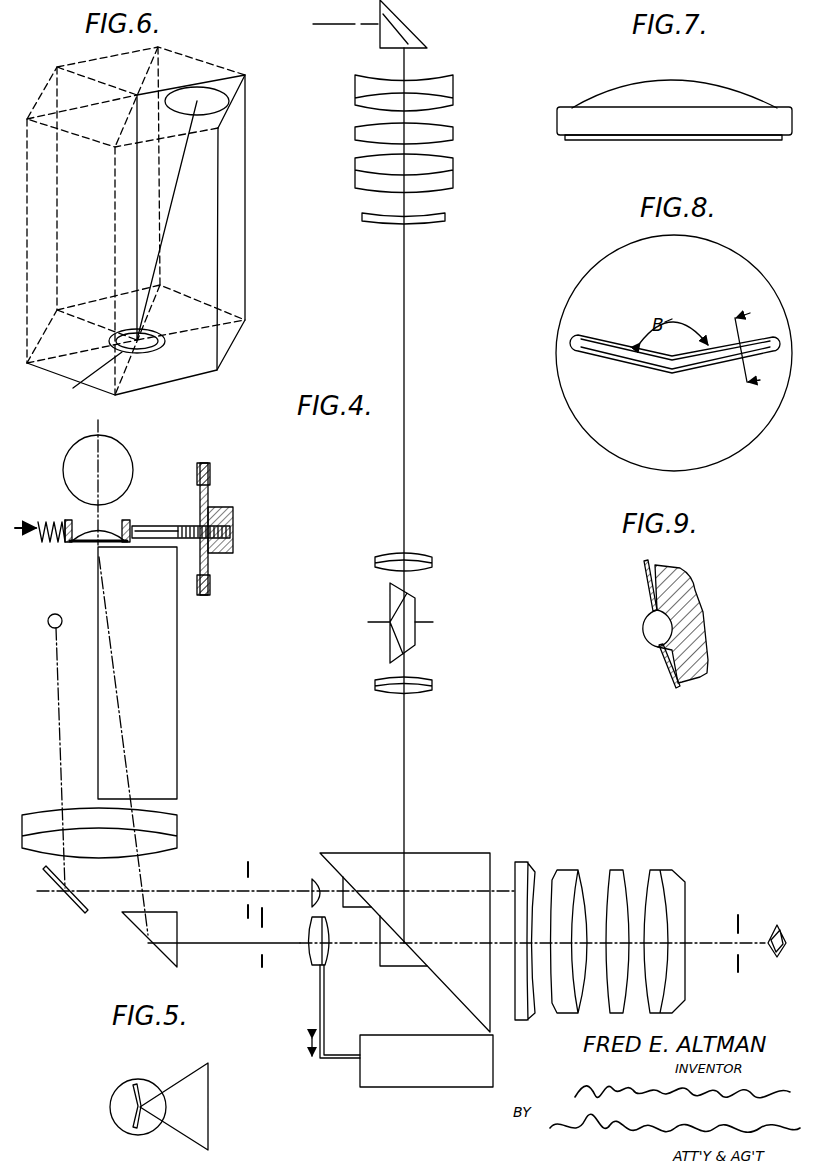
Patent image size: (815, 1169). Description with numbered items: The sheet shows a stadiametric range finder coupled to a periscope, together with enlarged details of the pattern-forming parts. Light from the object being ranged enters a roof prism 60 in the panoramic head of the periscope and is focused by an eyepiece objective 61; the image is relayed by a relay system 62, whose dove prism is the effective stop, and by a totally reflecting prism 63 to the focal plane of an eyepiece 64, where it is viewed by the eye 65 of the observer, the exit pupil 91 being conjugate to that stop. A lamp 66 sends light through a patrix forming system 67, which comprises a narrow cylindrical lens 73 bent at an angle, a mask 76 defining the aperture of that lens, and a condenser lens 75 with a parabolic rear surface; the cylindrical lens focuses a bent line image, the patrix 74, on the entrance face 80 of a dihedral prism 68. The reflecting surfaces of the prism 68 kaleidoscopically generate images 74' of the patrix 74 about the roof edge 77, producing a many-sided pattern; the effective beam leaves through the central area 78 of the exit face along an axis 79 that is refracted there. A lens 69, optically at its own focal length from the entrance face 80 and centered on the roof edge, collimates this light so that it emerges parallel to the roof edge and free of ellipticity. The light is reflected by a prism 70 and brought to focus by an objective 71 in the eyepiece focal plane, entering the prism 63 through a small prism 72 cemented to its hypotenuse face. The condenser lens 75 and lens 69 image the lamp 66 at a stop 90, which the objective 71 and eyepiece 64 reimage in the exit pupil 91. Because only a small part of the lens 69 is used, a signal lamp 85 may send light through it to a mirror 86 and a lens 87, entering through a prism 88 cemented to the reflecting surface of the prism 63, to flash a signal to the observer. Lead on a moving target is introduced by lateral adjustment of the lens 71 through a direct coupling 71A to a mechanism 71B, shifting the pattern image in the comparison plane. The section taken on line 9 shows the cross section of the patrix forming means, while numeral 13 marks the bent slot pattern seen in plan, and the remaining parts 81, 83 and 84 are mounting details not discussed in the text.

In FIG. 8, the section line 9- 9 is at (755, 349).
In FIG. 8, the reticle chevron 13 is at (577, 341).
In FIG. 4, the roof prism 60 is at (410, 40).
In FIG. 4, the eyepiece objective 61 is at (348, 72).
In FIG. 4, the relay system 62 is at (360, 553).
In FIG. 4, the totally reflecting prism 63 is at (456, 858).
In FIG. 4, the eyepiece 64 is at (675, 853).
In FIG. 4, the eye 65 is at (786, 915).
In FIG. 4, the lamp 66 is at (113, 452).
In FIG. 7, the patrix forming system 67 is at (558, 118).
In FIG. 9, the patrix forming system 67 is at (694, 602).
In FIG. 5, the patrix forming system 67 is at (116, 1098).
In FIG. 4, the patrix forming system 67 is at (82, 544).
In FIG. 6, the prism 68 is at (236, 188).
In FIG. 5, the prism 68 is at (200, 1097).
In FIG. 4, the prism 68 is at (177, 710).
In FIG. 4, the lens 69 is at (170, 838).
In FIG. 4, the prism 70 is at (160, 952).
In FIG. 4, the objective 71 is at (316, 962).
In FIG. 4, the direct coupling 71A is at (320, 1012).
In FIG. 4, the mechanism 71B is at (393, 1088).
In FIG. 4, the small prism 72 is at (394, 958).
In FIG. 7, the narrow cylindrical lens 73 is at (580, 139).
In FIG. 9, the narrow cylindrical lens 73 is at (655, 630).
In FIG. 5, the narrow cylindrical lens 73 is at (141, 1085).
In FIG. 6, the patrix 74 is at (154, 365).
In FIG. 6, the images 74' is at (83, 376).
In FIG. 7, the condenser lens 75 is at (703, 92).
In FIG. 4, the condenser lens 75 is at (103, 530).
In FIG. 8, the mask 76 is at (580, 412).
In FIG. 9, the mask 76 is at (645, 568).
In FIG. 6, the roof edge 77 is at (137, 215).
In FIG. 6, the central area 78 is at (222, 92).
In FIG. 6, the axis 79 is at (171, 205).
In FIG. 4, the entrance face 80 is at (160, 550).
In FIG. 4, the spring 81 is at (47, 520).
In FIG. 4, the bracket 83 is at (220, 512).
In FIG. 4, the bracket flange 84 is at (212, 593).
In FIG. 4, the lamp 85 is at (48, 618).
In FIG. 4, the mirror 86 is at (70, 898).
In FIG. 4, the lens 87 is at (312, 886).
In FIG. 4, the prism 88 is at (341, 880).
In FIG. 4, the stop 90 is at (258, 960).
In FIG. 4, the exit pupil 91 is at (738, 920).